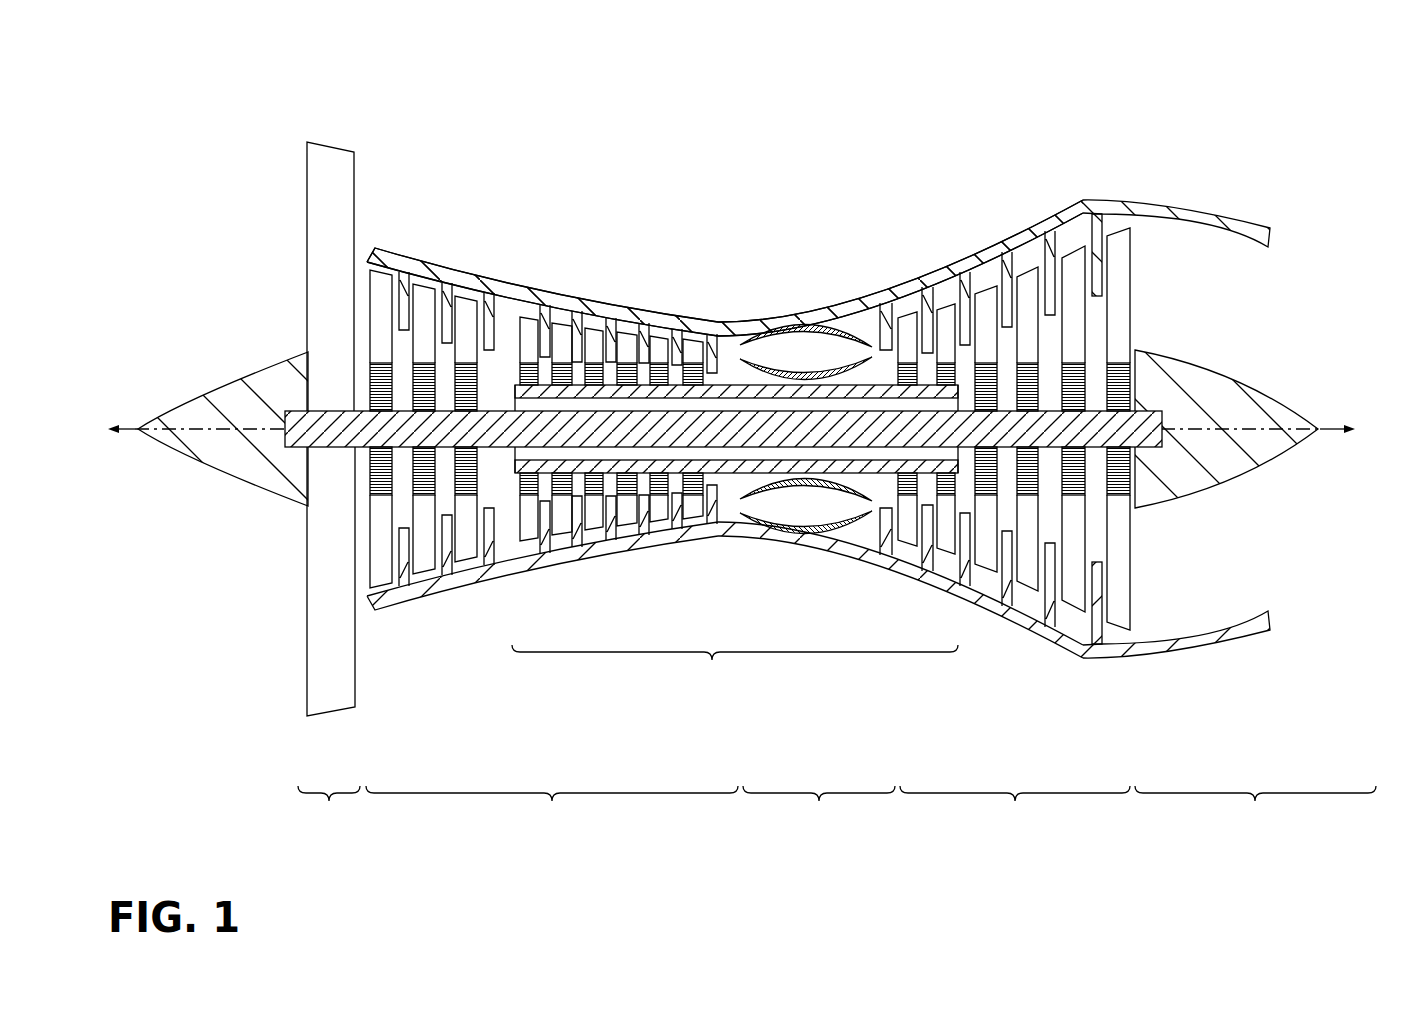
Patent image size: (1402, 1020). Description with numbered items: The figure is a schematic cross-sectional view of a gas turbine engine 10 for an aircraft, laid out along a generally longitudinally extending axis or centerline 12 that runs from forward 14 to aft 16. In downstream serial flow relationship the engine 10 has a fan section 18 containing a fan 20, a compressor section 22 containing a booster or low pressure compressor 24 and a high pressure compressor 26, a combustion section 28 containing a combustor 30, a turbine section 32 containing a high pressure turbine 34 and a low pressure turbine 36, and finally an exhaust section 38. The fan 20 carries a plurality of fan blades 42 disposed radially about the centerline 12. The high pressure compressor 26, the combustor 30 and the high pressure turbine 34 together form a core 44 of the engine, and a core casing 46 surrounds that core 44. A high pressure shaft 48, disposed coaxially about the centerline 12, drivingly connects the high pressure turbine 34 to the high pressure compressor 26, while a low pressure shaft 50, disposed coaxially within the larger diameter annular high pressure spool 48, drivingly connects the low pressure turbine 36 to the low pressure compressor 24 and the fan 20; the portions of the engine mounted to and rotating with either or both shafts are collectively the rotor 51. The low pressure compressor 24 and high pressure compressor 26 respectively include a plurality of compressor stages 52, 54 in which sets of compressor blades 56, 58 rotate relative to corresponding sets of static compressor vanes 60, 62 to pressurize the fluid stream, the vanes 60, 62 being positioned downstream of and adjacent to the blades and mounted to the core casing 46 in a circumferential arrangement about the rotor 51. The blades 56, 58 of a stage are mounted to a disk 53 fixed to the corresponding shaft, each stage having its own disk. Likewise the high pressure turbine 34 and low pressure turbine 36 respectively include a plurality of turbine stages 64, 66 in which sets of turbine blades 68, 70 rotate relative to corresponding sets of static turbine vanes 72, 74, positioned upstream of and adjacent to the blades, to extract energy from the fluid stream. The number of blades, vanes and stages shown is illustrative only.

The gas turbine engine 10 is at (166, 40).
The centerline 12 is at (203, 427).
The forward 14 is at (105, 431).
The aft 16 is at (1356, 431).
The fan section 18 is at (329, 813).
The fan 20 is at (290, 210).
The compressor section 22 is at (552, 813).
The low pressure compressor 24 is at (508, 557).
The high pressure compressor 26 is at (671, 552).
The combustion section 28 is at (819, 813).
The combustor 30 is at (861, 318).
The turbine section 32 is at (1015, 813).
The high pressure turbine 34 is at (879, 580).
The low pressure turbine 36 is at (1015, 628).
The exhaust section 38 is at (1229, 701).
The fan blades 42 is at (318, 653).
The core 44 is at (735, 670).
The core casing 46 is at (786, 308).
The HP shaft 48 is at (737, 383).
The LP shaft 50 is at (496, 410).
The rotor 51 is at (651, 396).
The compressor stages 52 is at (365, 238).
The disk 53 is at (1030, 367).
The compressor stages 54 is at (530, 278).
The compressor blades 56 is at (386, 280).
The compressor blades 58 is at (532, 327).
The static compressor vanes 60 is at (405, 300).
The static compressor vanes 62 is at (541, 360).
The turbine stages 64 is at (911, 264).
The turbine stages 66 is at (1045, 211).
The turbine blades 68 is at (947, 323).
The turbine blades 70 is at (1073, 270).
The static turbine vanes 72 is at (927, 310).
The static turbine vanes 74 is at (1052, 260).